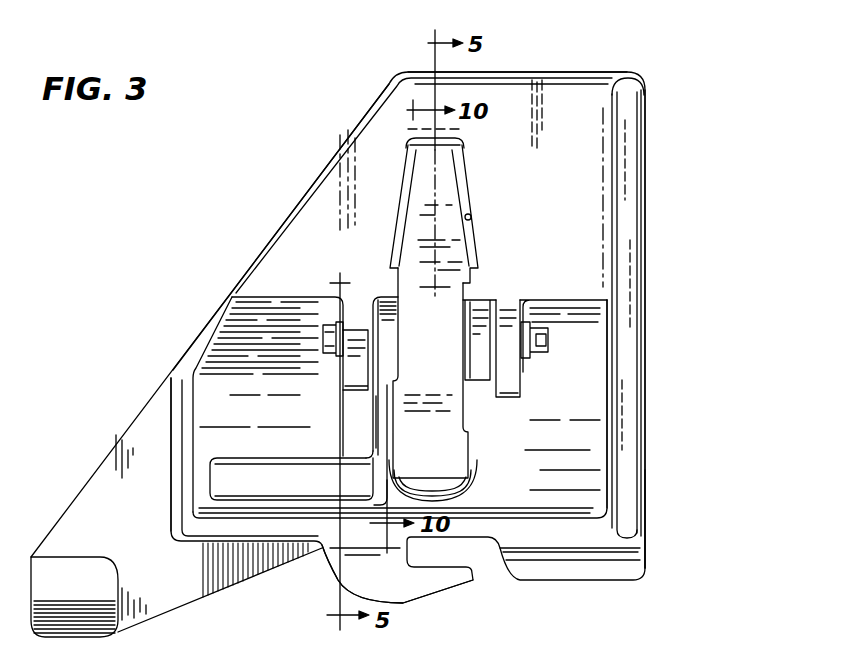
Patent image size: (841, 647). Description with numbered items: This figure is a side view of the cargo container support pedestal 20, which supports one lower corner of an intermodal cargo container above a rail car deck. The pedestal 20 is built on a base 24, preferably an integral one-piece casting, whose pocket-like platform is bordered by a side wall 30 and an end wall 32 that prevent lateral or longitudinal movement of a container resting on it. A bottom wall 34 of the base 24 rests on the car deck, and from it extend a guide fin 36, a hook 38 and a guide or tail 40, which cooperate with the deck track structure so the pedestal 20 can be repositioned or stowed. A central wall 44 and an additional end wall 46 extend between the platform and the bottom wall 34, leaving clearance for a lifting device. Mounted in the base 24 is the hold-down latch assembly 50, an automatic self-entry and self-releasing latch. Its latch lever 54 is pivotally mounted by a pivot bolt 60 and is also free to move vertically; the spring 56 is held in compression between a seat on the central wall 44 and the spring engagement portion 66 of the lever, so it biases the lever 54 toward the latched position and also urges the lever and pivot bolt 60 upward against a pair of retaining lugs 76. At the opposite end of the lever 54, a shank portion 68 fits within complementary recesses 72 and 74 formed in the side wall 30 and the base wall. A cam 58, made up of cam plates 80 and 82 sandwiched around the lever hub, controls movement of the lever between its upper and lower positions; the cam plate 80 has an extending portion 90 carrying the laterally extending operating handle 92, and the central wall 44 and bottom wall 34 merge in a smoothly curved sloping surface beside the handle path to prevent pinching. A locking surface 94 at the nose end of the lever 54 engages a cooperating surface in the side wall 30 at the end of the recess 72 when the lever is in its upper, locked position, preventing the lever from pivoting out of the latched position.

The cargo container support pedestal 20 is at (218, 270).
The base 24 is at (643, 507).
The side wall 30 is at (565, 90).
The end wall 32 is at (638, 255).
The bottom wall 34 is at (250, 545).
The guide fin 36 is at (595, 577).
The hook 38 is at (427, 588).
The guide or tail 40 is at (61, 562).
The central wall 44 is at (592, 420).
The additional end wall 46 is at (173, 420).
The hold-down latch assembly 50 is at (339, 179).
The latch lever 54 is at (450, 198).
The spring 56 is at (473, 484).
The cam 58 is at (380, 447).
The pivot bolt 60 is at (323, 338).
The spring engagement portion 66 is at (463, 440).
The shank portion 68 is at (450, 267).
The recess 72 is at (472, 217).
The recess 74 is at (463, 291).
The retaining lug 76 is at (342, 365).
The cam plate 80 is at (385, 315).
The cam plate 82 is at (500, 326).
The extending portion 90 is at (382, 407).
The operating handle 92 is at (260, 478).
The locking surface 94 is at (453, 135).